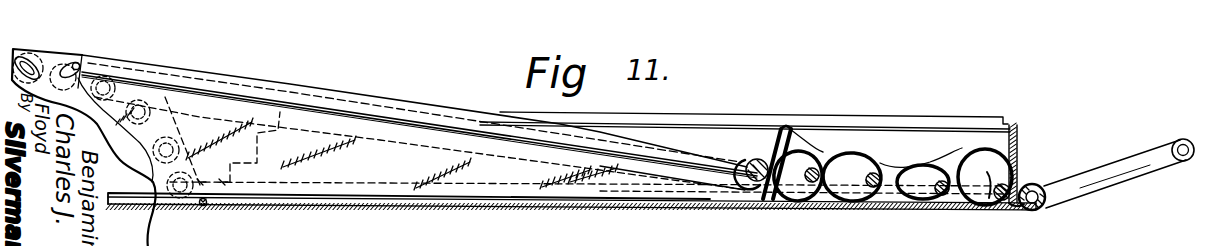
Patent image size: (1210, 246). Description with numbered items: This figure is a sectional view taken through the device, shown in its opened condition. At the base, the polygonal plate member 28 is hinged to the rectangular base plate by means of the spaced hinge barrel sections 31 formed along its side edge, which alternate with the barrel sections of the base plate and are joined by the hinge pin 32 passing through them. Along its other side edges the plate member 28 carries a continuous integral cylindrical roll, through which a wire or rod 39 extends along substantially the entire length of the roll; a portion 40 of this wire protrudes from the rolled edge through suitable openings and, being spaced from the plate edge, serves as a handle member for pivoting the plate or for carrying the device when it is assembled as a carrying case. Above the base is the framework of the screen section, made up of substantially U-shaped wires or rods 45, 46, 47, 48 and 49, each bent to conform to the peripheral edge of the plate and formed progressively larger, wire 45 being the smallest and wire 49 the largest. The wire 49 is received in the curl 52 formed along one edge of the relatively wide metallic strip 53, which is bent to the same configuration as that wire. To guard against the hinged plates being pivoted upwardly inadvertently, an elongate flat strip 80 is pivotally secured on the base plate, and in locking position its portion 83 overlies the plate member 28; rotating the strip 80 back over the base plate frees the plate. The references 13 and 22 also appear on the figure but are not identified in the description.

The section line 13 is at (432, 54).
The mounting bracket 22 is at (170, 201).
The plate member 28 is at (513, 207).
The hinge barrel sections 31 is at (203, 207).
The hinge pin 32 is at (207, 205).
The wire or rod 39 is at (1031, 212).
The protruding portion 40 is at (1128, 165).
The U-shaped wire or rod 45 is at (1017, 186).
The U-shaped wire or rod 46 is at (948, 168).
The U-shaped wire or rod 47 is at (881, 168).
The U-shaped wire or rod 48 is at (819, 175).
The U-shaped wire or rod 49 is at (760, 160).
The curl 52 is at (622, 133).
The metallic strip 53 is at (694, 128).
The flat strip 80 is at (345, 187).
The portion of flat strip 83 is at (500, 197).